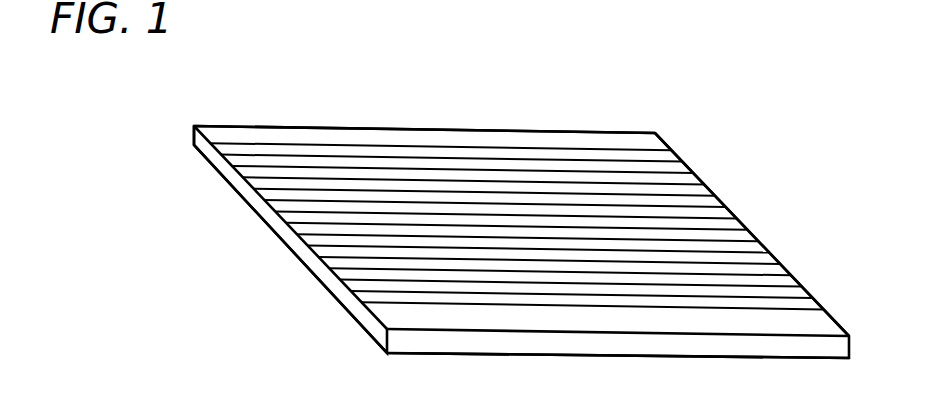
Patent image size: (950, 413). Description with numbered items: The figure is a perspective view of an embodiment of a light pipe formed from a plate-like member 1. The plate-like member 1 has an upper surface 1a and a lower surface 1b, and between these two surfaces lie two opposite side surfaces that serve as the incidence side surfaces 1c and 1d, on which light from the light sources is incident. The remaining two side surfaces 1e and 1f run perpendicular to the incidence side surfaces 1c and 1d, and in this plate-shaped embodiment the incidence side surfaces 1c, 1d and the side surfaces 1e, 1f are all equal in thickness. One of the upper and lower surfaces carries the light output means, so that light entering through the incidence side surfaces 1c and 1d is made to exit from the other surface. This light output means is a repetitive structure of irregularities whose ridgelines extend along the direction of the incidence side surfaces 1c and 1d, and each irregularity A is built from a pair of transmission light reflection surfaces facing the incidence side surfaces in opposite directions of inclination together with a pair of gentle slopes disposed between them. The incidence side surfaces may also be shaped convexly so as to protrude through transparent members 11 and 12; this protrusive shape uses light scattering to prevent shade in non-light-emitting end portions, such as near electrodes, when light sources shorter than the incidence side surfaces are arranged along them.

The plate-like member 1 is at (283, 110).
The upper surface 1a is at (678, 226).
The lower surface 1b is at (328, 295).
The incidence side surface 1c is at (384, 128).
The incidence side surface 1d is at (567, 342).
The side surface 1e is at (258, 203).
The side surface 1f is at (763, 236).
The transparent member 11 is at (637, 135).
The transparent member 12 is at (828, 327).
The irregularity A is at (712, 240).